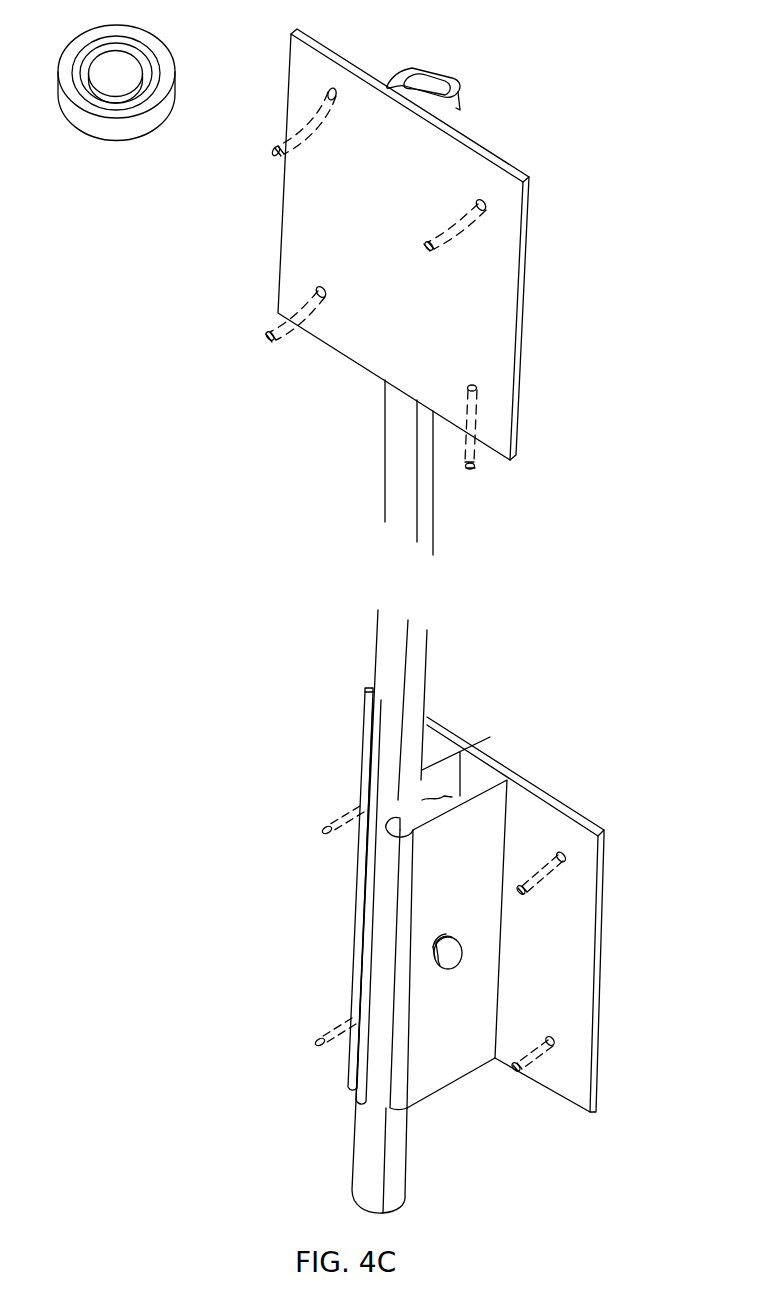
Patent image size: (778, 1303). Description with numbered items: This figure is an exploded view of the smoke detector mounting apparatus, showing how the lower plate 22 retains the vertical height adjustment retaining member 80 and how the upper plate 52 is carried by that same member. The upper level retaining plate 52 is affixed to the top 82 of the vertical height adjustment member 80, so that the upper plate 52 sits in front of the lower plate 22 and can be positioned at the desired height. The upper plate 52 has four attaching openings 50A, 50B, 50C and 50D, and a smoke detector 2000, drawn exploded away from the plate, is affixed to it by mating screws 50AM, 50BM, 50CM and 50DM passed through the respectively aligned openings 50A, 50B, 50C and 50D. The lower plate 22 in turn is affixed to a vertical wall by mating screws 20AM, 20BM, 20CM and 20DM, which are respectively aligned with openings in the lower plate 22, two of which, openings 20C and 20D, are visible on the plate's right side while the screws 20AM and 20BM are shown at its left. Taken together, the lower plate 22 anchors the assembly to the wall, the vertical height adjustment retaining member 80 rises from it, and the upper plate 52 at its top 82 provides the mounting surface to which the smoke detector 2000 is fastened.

The smoke detector 2000 is at (152, 38).
The upper plate 52 is at (466, 159).
The opening 50C is at (330, 96).
The mating screw 50CM is at (272, 151).
The opening 50A is at (486, 205).
The mating screw 50AM is at (428, 248).
The opening 50D is at (320, 291).
The mating screw 50DM is at (268, 336).
The opening 50B is at (478, 389).
The mating screw 50BM is at (472, 467).
The top of the vertical height adjustment member 82 is at (385, 380).
The vertical height adjustment retaining member 80 is at (374, 479).
The lower plate 22 is at (540, 798).
The mating screw 20AM is at (325, 830).
The mating screw 20BM is at (320, 1040).
The opening 20C is at (565, 855).
The mating screw 20CM is at (522, 891).
The opening 20D is at (555, 1040).
The mating screw 20DM is at (518, 1068).